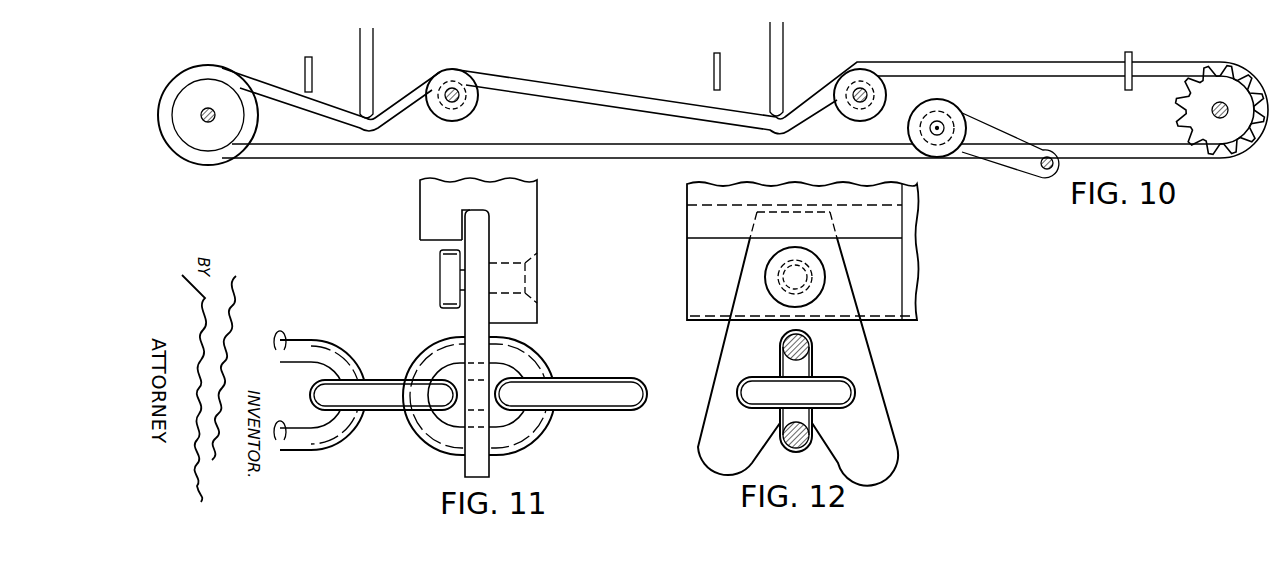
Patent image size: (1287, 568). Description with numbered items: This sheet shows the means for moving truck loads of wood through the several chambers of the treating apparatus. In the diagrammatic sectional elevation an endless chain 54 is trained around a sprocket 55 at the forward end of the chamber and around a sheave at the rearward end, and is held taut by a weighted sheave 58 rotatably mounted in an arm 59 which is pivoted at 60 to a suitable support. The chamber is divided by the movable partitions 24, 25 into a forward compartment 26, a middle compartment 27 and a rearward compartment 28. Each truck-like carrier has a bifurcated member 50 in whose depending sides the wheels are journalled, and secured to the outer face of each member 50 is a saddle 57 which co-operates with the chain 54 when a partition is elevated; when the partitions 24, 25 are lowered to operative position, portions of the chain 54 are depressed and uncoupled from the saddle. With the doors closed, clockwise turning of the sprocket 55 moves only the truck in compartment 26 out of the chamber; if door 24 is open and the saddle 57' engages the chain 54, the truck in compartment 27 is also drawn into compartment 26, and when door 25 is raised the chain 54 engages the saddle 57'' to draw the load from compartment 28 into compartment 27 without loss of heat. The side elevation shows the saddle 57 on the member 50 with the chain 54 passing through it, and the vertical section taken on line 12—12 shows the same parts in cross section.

In FIG. 11, the section line 12— 12 is at (302, 498).
In FIG. 10, the movable partition 24 is at (783, 52).
In FIG. 10, the movable partition 25 is at (374, 58).
In FIG. 10, the compartment 26 is at (995, 34).
In FIG. 10, the middle compartment 27 is at (557, 48).
In FIG. 10, the compartment 28 is at (240, 48).
In FIG. 11, the bifurcated member 50 is at (530, 232).
In FIG. 12, the bifurcated member 50 is at (890, 230).
In FIG. 10, the endless chain 54 is at (612, 90).
In FIG. 11, the endless chain 54 is at (568, 388).
In FIG. 12, the endless chain 54 is at (797, 450).
In FIG. 10, the sprocket 55 is at (1230, 140).
In FIG. 10, the saddle 57 is at (1146, 52).
In FIG. 11, the saddle 57 is at (447, 343).
In FIG. 12, the saddle 57 is at (808, 349).
In FIG. 10, the saddle 57' is at (734, 56).
In FIG. 10, the saddle 57'' is at (327, 57).
In FIG. 10, the weighted sheave 58 is at (950, 112).
In FIG. 10, the arm 59 is at (1010, 135).
In FIG. 10, the pivot 60 is at (1049, 159).